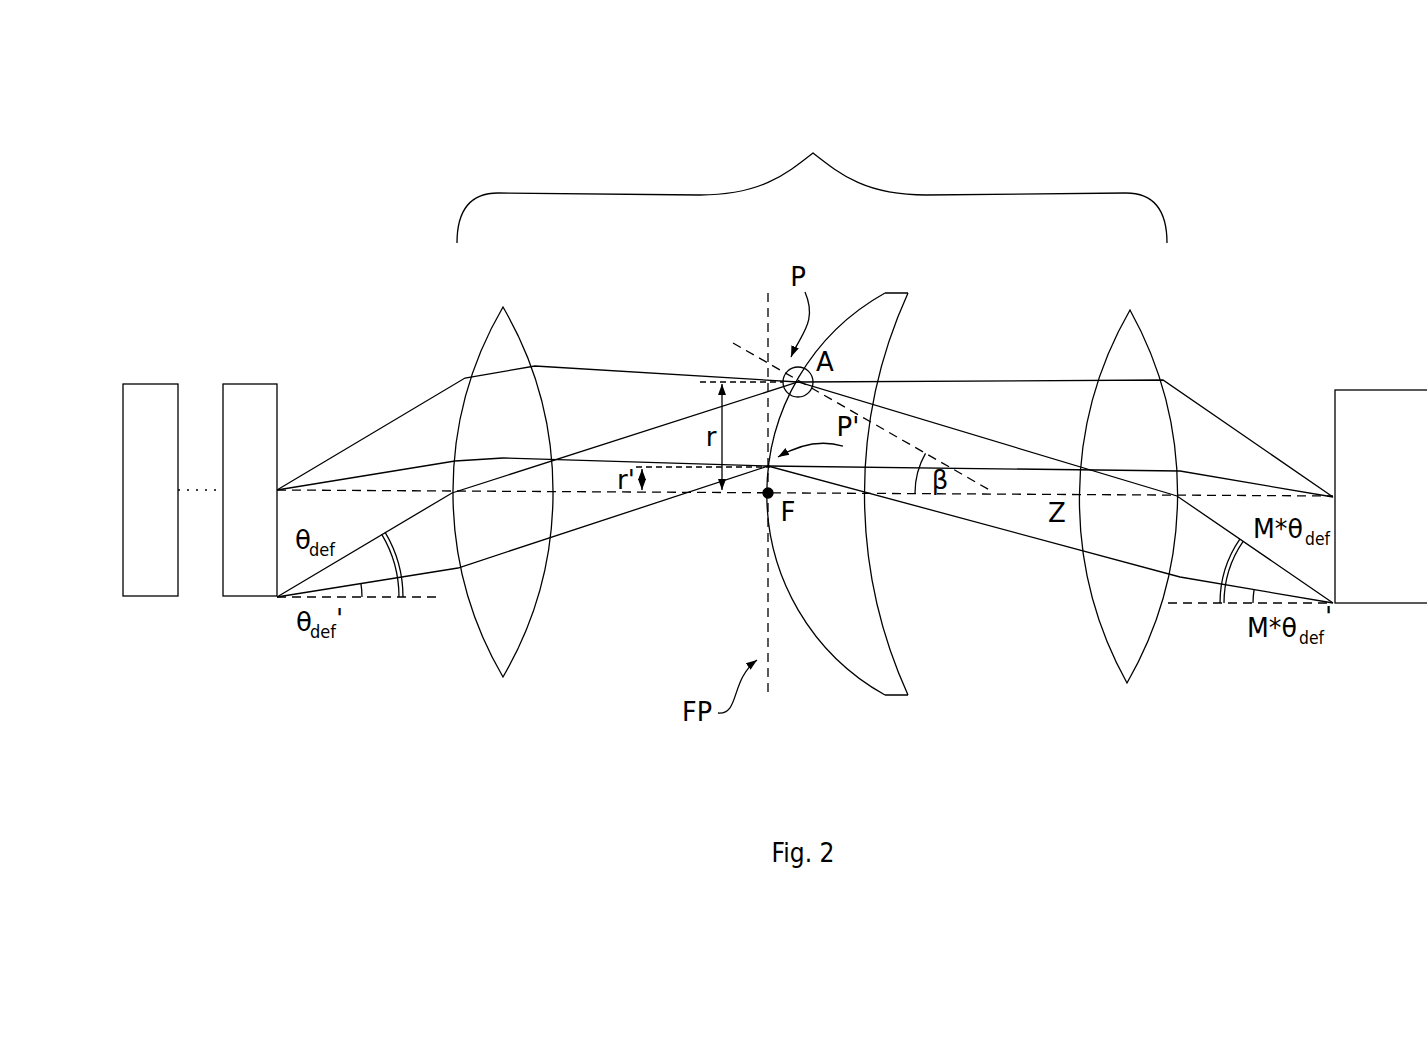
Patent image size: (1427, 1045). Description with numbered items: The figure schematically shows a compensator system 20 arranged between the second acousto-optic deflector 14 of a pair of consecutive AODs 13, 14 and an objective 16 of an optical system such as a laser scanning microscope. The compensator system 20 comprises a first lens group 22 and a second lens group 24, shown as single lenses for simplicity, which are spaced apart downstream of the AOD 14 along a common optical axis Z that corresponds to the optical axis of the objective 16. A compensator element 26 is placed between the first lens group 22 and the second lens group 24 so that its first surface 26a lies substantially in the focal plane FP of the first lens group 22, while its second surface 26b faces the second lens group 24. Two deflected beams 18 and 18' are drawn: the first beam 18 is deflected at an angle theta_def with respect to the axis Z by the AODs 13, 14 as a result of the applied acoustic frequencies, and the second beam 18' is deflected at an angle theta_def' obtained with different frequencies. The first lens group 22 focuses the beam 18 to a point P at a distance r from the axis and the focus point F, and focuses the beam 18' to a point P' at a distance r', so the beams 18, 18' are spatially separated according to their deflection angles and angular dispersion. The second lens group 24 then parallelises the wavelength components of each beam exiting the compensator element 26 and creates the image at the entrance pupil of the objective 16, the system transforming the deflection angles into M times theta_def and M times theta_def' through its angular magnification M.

The first acousto-optic deflector 13 is at (150, 383).
The second acousto-optic deflector 14 is at (254, 383).
The objective 16 is at (1380, 388).
The first beam 18 is at (805, 439).
The second beam 18' is at (805, 567).
The compensator system 20 is at (815, 454).
The first lens group 22 is at (502, 677).
The second lens group 24 is at (1127, 683).
The compensator element 26 is at (892, 495).
The first surface 26a is at (866, 298).
The second surface 26b is at (912, 305).